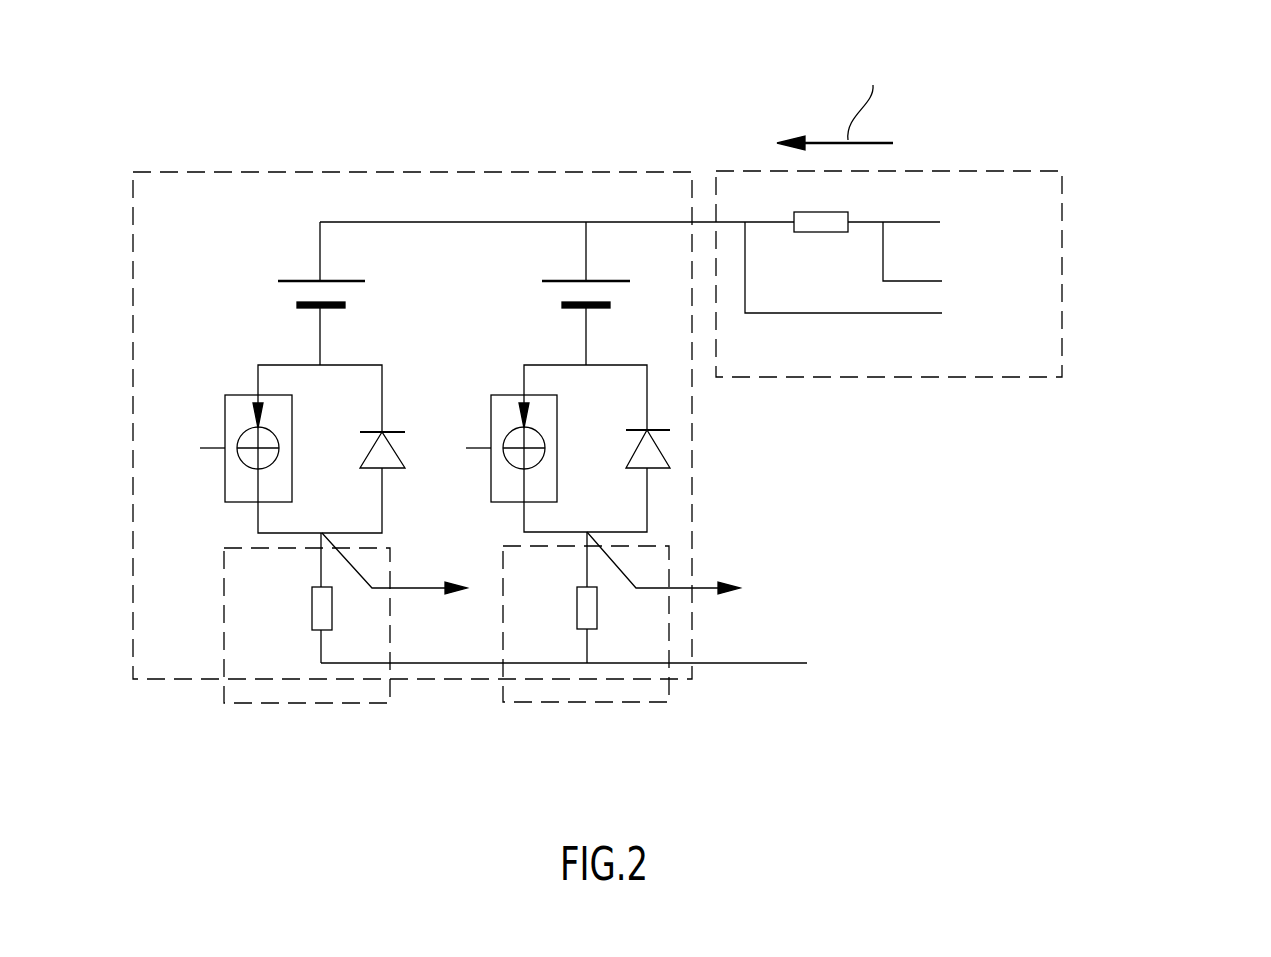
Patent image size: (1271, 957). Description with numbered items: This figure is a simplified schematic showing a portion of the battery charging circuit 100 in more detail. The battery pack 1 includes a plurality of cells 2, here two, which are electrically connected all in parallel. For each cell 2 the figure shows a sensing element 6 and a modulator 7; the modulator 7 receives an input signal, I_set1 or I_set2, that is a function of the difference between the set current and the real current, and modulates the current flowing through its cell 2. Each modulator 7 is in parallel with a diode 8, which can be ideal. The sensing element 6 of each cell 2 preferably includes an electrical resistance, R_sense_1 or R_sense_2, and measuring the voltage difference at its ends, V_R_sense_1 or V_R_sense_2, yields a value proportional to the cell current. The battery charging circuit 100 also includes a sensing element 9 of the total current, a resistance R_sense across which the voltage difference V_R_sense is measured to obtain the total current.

The battery charging circuit 100 is at (1143, 88).
The battery pack 1 is at (310, 172).
The cell 2 is at (250, 297).
The sensing element 6 is at (288, 703).
The modulator 7 is at (215, 492).
The diode 8 is at (383, 460).
The sensing element of the total current 9 is at (938, 377).